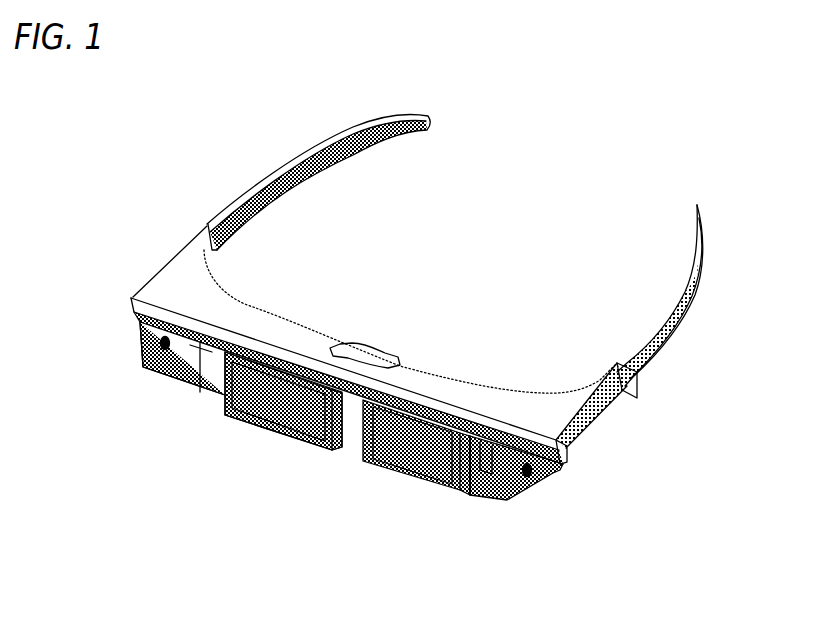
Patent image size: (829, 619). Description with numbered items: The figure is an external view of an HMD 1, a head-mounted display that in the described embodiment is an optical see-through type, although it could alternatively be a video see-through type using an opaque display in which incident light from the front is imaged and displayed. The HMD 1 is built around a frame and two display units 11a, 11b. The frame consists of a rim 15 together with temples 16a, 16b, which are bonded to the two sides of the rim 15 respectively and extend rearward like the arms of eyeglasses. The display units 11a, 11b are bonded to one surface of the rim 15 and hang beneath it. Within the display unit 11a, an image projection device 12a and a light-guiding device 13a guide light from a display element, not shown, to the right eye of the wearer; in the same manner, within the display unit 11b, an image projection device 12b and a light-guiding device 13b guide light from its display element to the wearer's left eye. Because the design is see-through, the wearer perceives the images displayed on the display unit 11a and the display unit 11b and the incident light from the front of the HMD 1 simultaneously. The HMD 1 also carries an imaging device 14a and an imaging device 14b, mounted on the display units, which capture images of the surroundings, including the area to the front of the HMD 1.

The HMD 1 is at (573, 125).
The display unit 11a is at (222, 493).
The display unit 11b is at (444, 580).
The image projection device 12a is at (187, 368).
The image projection device 12b is at (507, 485).
The light-guiding device 13a is at (287, 403).
The light-guiding device 13b is at (423, 453).
The imaging device 14a is at (157, 346).
The imaging device 14b is at (543, 463).
The rim 15 is at (223, 310).
The temple 16a is at (308, 167).
The temple 16b is at (687, 310).